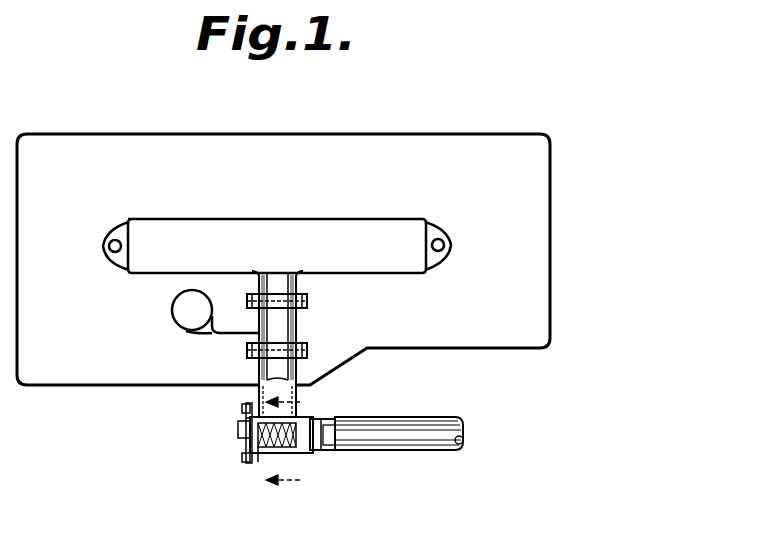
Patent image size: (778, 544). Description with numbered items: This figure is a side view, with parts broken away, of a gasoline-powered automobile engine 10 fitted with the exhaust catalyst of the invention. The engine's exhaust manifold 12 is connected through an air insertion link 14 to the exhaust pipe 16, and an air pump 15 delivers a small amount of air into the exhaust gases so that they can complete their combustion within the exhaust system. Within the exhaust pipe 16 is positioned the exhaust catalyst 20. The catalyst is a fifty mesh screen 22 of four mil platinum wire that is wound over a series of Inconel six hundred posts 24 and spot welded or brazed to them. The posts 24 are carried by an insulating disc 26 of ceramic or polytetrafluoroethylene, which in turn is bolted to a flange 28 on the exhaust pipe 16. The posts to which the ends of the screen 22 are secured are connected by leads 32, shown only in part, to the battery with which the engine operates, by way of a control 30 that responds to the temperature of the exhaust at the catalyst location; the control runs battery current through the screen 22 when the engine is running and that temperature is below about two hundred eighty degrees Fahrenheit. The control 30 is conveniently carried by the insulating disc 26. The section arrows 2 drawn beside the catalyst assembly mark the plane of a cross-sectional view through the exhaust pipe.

The section line 2- 2 is at (293, 441).
The automobile engine 10 is at (532, 217).
The exhaust manifold 12 is at (399, 263).
The air insertion link 14 is at (283, 328).
The air pump 15 is at (177, 300).
The exhaust pipe 16 is at (408, 432).
The exhaust catalyst 20 is at (305, 435).
The screen 22 is at (270, 440).
The posts 24 is at (247, 445).
The insulating disc 26 is at (250, 449).
The flange 28 is at (254, 450).
The control 30 is at (246, 420).
The leads 32 is at (240, 440).